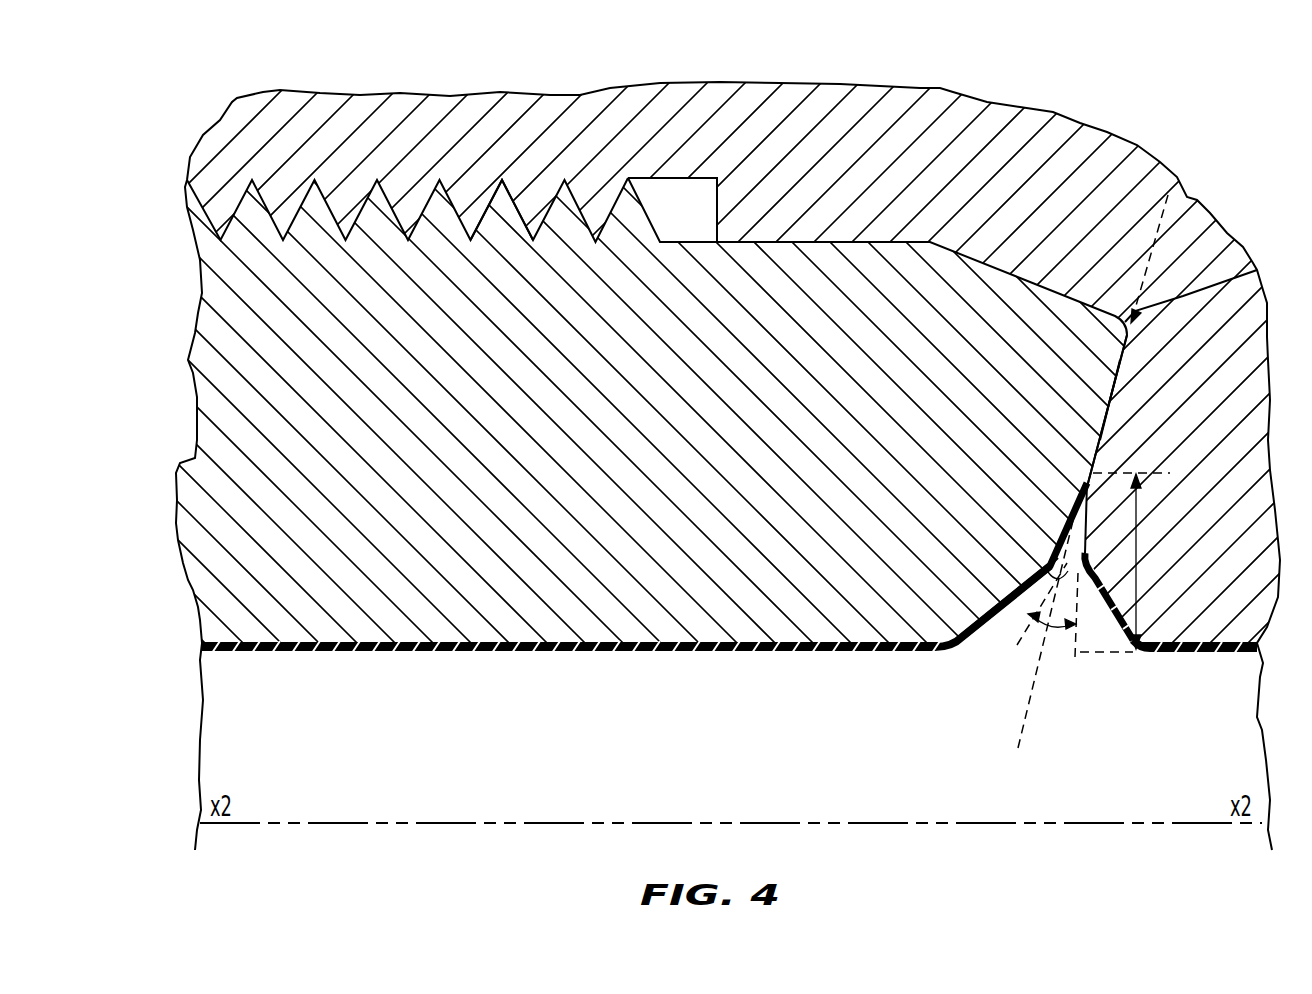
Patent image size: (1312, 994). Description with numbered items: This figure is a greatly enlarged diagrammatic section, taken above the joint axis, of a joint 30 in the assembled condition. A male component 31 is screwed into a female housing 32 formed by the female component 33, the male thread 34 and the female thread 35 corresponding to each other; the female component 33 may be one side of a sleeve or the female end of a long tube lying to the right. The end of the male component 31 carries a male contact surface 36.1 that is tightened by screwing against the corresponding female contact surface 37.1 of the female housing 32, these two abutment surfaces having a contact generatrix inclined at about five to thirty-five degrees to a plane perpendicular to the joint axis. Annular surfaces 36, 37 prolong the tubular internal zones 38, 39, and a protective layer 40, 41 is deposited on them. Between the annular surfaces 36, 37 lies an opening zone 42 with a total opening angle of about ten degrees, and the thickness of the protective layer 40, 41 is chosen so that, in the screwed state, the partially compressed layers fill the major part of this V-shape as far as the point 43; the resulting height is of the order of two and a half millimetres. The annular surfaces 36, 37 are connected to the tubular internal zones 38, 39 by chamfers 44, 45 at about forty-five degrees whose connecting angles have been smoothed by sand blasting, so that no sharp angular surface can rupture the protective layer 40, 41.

The joint 30 is at (766, 78).
The male component 31 is at (523, 446).
The female housing 32 is at (815, 190).
The female component 33 is at (1223, 463).
The male thread 34 is at (393, 217).
The female thread 35 is at (482, 197).
The annular surface of the male component 36 is at (1006, 501).
The male contact surface 36.1 is at (1108, 398).
The annular surface of the female component 37 is at (1152, 511).
The female contact surface 37.1 is at (1115, 368).
The tubular internal zone of the male component 38 is at (788, 644).
The tubular internal zone of the female component 39 is at (1247, 642).
The protective layer on the male component 40 is at (672, 653).
The protective layer on the female component 41 is at (1210, 654).
The opening zone 42 is at (985, 700).
The filling limit point 43 is at (1045, 571).
The chamfer of the male component 44 is at (995, 607).
The chamfer of the female component 45 is at (1110, 603).